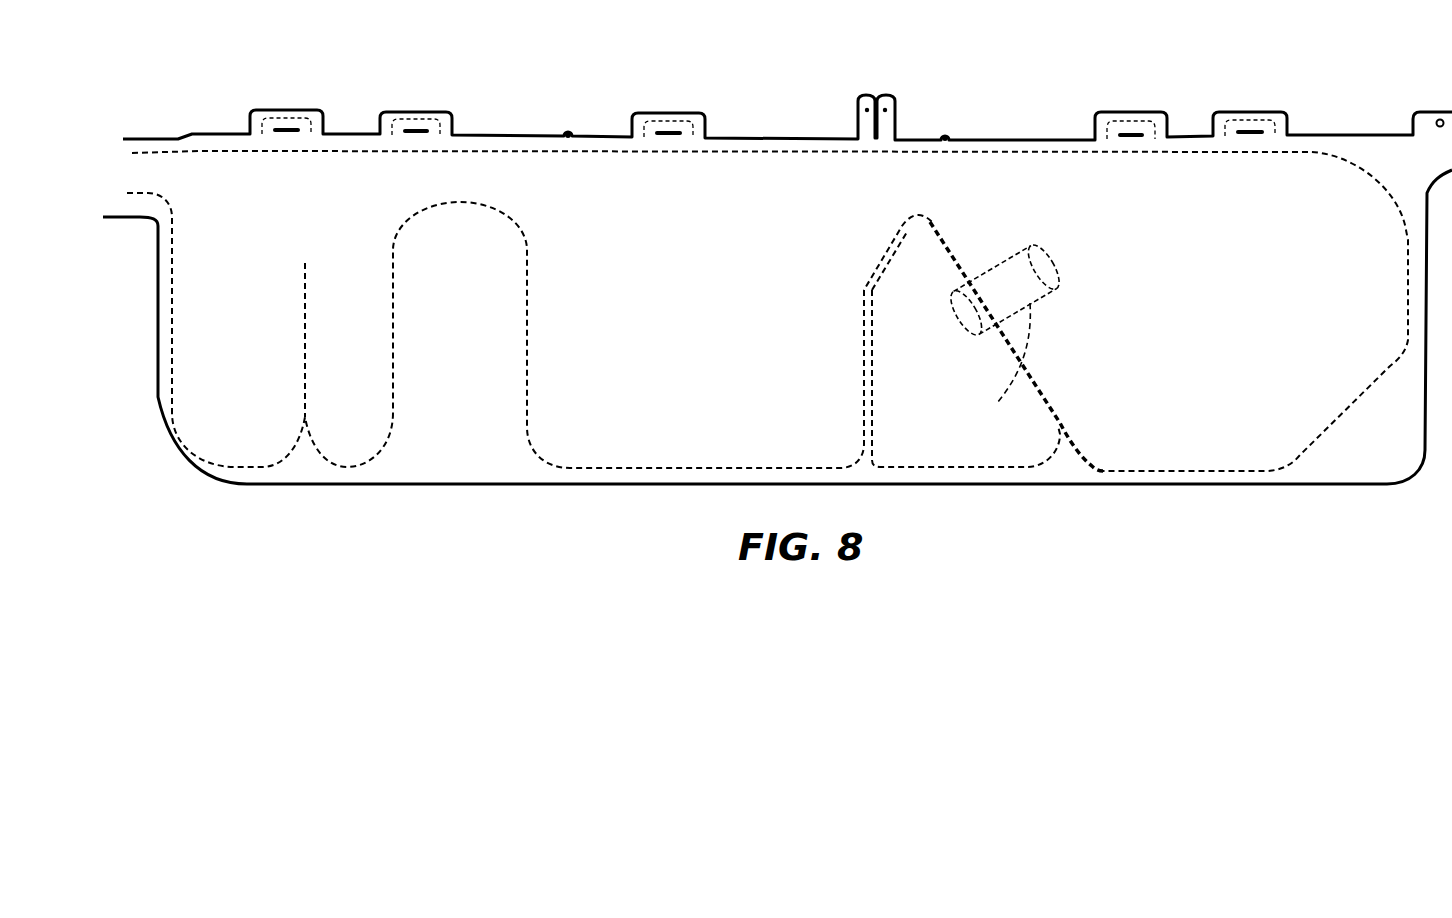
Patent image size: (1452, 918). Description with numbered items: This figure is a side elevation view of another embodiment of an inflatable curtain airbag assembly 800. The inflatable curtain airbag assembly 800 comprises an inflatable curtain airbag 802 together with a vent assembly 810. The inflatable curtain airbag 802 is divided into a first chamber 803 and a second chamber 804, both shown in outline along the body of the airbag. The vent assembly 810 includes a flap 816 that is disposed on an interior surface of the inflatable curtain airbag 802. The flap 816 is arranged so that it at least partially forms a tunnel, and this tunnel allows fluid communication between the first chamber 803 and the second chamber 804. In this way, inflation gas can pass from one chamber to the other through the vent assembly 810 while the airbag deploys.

The inflatable curtain airbag assembly 800 is at (760, 108).
The inflatable curtain airbag 802 is at (1008, 220).
The first chamber 803 is at (942, 173).
The second chamber 804 is at (902, 453).
The vent assembly 810 is at (1035, 238).
The flap 816 is at (1000, 403).